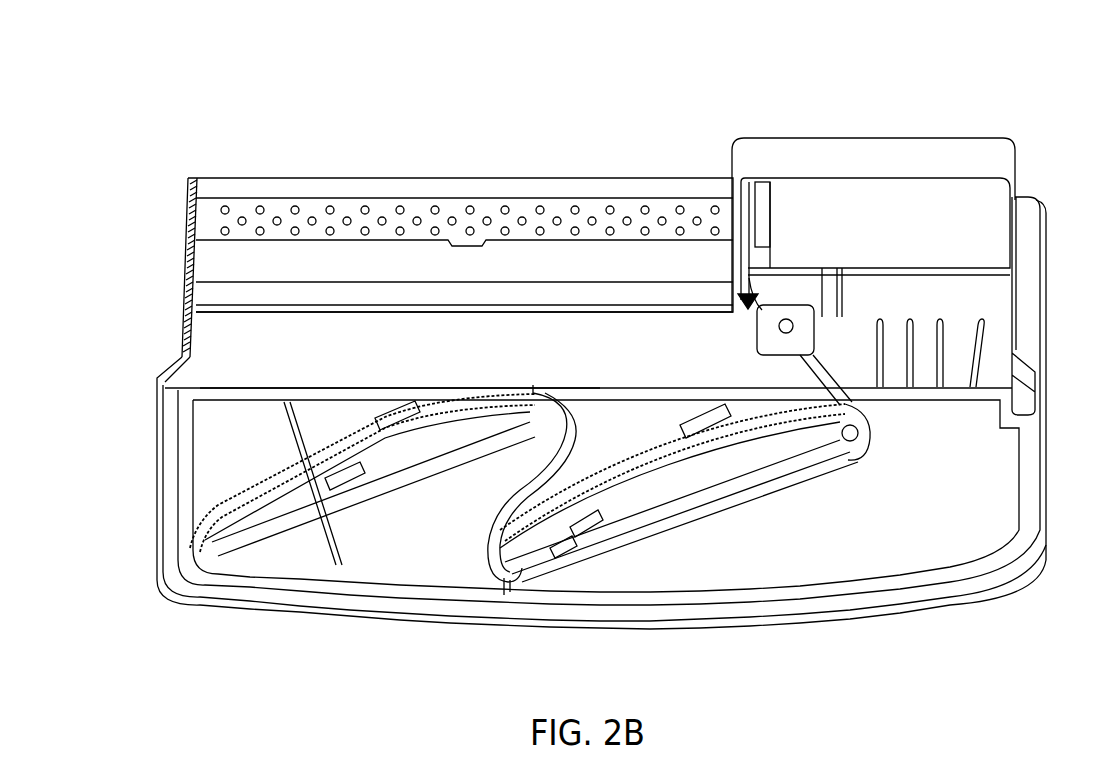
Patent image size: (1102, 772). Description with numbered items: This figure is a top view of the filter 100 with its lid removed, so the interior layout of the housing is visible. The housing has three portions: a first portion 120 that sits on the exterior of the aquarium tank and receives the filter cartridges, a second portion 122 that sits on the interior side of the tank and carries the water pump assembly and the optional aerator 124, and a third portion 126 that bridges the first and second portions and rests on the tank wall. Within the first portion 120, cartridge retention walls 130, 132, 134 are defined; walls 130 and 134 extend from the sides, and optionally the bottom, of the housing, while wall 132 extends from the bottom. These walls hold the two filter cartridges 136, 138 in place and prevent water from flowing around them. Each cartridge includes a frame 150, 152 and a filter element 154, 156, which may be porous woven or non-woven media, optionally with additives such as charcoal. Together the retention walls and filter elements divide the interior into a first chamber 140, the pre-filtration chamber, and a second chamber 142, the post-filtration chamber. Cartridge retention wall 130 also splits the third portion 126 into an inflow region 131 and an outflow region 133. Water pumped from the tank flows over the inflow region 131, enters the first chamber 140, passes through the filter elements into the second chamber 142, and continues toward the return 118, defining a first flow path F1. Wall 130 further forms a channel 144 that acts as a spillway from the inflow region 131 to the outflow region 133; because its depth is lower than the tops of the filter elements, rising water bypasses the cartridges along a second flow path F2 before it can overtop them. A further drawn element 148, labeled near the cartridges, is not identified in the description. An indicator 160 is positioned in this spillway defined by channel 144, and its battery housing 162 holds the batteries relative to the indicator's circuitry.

The filter 100 is at (218, 98).
The return 118 is at (525, 185).
The aerator 124 is at (612, 205).
The second portion 122 is at (978, 226).
The inflow region 131 is at (978, 312).
The third portion 126 is at (237, 357).
The outflow region 133 is at (340, 365).
The indicator 160 is at (773, 300).
The battery housing 162 is at (785, 310).
The channel 144 is at (818, 316).
The second chamber 142 is at (600, 458).
The cartridge retention wall 132 is at (495, 525).
The frame 150 is at (567, 547).
The frame 152 is at (285, 455).
The filter element 156 is at (290, 490).
The filter cartridge 138 is at (350, 500).
The cartridge retention wall 134 is at (200, 555).
The spring 148 is at (805, 365).
The filter element 154 is at (677, 435).
The filter cartridge 136 is at (748, 470).
The cartridge retention wall 130 is at (860, 448).
The first chamber 140 is at (937, 552).
The first portion 120 is at (1030, 514).
The first flow path F1 is at (616, 343).
The second flow path F2 is at (758, 303).